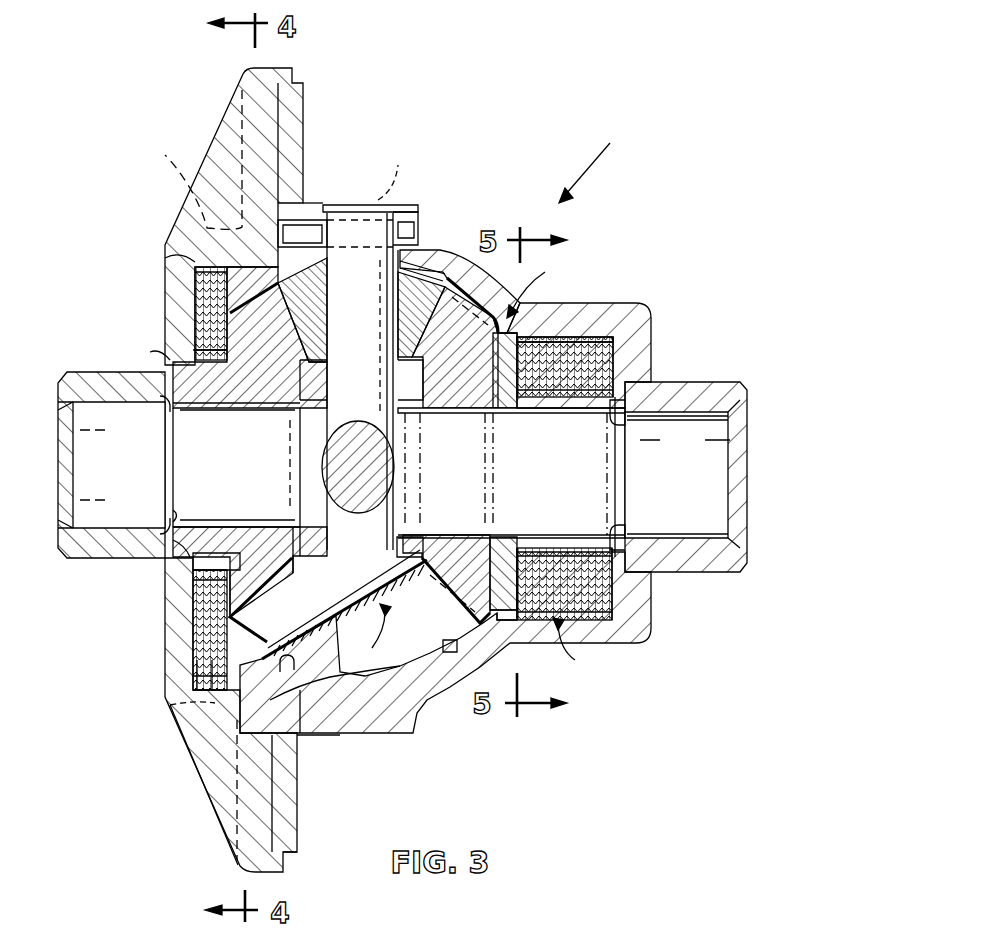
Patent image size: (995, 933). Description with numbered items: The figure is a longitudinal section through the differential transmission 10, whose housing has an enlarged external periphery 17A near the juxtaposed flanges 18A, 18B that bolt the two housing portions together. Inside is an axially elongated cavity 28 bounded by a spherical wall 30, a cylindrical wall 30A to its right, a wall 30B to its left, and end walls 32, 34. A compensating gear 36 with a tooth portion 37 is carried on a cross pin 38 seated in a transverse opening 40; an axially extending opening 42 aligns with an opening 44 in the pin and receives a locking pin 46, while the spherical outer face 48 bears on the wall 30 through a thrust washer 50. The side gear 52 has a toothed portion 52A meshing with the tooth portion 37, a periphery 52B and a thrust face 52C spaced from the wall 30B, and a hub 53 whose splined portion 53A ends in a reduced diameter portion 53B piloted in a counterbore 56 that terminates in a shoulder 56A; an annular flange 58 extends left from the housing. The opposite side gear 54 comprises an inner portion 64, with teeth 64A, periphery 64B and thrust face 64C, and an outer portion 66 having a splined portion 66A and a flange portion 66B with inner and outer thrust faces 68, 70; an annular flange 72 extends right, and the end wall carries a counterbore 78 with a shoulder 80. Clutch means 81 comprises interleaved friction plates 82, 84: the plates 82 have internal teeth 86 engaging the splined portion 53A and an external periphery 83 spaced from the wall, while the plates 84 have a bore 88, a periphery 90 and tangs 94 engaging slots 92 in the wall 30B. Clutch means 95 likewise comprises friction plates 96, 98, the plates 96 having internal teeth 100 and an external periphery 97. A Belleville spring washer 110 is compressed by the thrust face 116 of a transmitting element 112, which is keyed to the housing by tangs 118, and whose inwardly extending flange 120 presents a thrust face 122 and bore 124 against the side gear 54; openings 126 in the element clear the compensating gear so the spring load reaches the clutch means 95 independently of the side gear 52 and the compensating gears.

The differential transmission 10 is at (596, 163).
The external periphery 17A is at (163, 162).
The flange 18A is at (265, 870).
The flange 18B is at (290, 843).
The cavity 28 is at (395, 735).
The spherical wall 30 is at (345, 728).
The cylindrical wall 30A is at (585, 340).
The wall 30B is at (283, 258).
The end wall 32 is at (200, 628).
The end wall 34 is at (612, 606).
The compensating gear 36 is at (421, 309).
The tooth portion 37 is at (318, 366).
The cross pin 38 is at (362, 381).
The transverse opening 40 is at (333, 212).
The axially extending opening 42 is at (412, 245).
The opening 44 is at (379, 177).
The locking pin 46 is at (406, 215).
The outer face 48 is at (445, 262).
The thrust washer 50 is at (308, 222).
The side gear 52 is at (255, 552).
The toothed portion 52A is at (293, 572).
The periphery 52B is at (270, 294).
The thrust face 52C is at (236, 406).
The hub 53 is at (200, 422).
The splined portion 53A is at (225, 412).
The reduced diameter portion 53B is at (172, 512).
The side gear 54 is at (540, 286).
The counterbore 56 is at (166, 412).
The shoulder 56A is at (166, 519).
The annular flange 58 is at (90, 378).
The inner portion 64 is at (460, 540).
The teeth 64A is at (445, 606).
The periphery 64B is at (443, 648).
The thrust face 64C is at (507, 648).
The outer portion 66 is at (515, 545).
The splined portion 66A is at (585, 555).
The flange portion 66B is at (510, 330).
The inner thrust face 68 is at (487, 418).
The outer thrust face 70 is at (545, 420).
The annular flange 72 is at (725, 390).
The counterbore 78 is at (620, 420).
The shoulder 80 is at (622, 525).
The clutch means 81 is at (188, 735).
The friction plates 82 is at (200, 645).
The external periphery 83 is at (195, 678).
The friction plates 84 is at (282, 568).
The internal teeth 86 is at (230, 545).
The bore 88 is at (165, 352).
The periphery 90 is at (188, 257).
The slots 92 is at (275, 664).
The tangs 94 is at (175, 703).
The clutch means 95 is at (558, 611).
The friction plates 96 is at (612, 362).
The external periphery 97 is at (603, 345).
The friction plates 98 is at (612, 578).
The internal teeth 100 is at (610, 420).
The Belleville spring washer 110 is at (205, 298).
The transmitting element 112 is at (365, 633).
The thrust face 116 is at (242, 624).
The tangs 118 is at (296, 742).
The flange 120 is at (397, 548).
The thrust face 122 is at (425, 408).
The bore 124 is at (420, 530).
The openings 126 is at (335, 380).